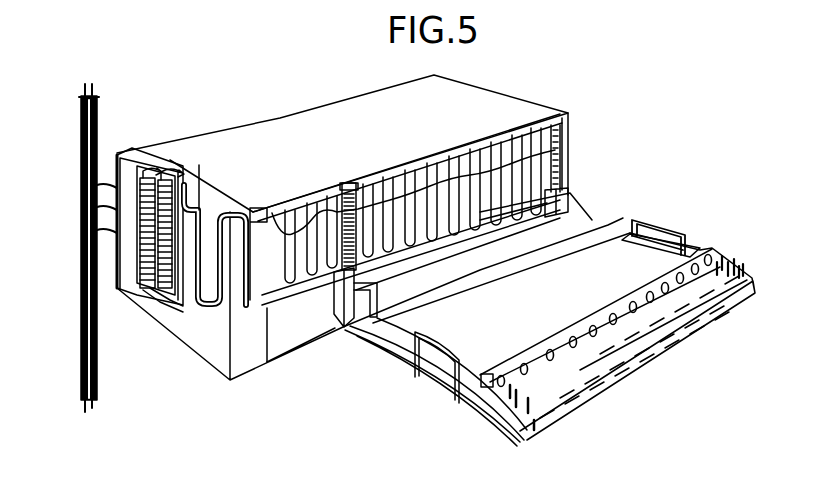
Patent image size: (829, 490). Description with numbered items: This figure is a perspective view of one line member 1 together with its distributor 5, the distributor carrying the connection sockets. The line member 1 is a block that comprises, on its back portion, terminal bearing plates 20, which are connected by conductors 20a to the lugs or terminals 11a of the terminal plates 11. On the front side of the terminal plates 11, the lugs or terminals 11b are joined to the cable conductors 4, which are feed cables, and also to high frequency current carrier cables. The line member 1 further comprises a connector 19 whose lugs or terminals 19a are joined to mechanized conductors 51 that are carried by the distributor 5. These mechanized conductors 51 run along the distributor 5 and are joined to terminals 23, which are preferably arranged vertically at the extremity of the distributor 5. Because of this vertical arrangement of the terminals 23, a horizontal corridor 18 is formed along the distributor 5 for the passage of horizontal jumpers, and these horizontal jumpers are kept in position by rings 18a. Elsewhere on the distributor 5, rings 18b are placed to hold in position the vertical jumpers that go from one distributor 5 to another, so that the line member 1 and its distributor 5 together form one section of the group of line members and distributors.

The line member 1 is at (213, 160).
The cable conductors 4 is at (100, 121).
The distributor 5 is at (633, 363).
The terminal plates 11 is at (135, 157).
The lugs or terminals 11a is at (160, 303).
The lugs or terminals 11b is at (112, 232).
The horizontal corridor 18 is at (583, 262).
The rings 18a is at (652, 222).
The rings 18b is at (417, 370).
The connector 19 is at (345, 318).
The lugs or terminals 19a is at (347, 332).
The terminal bearing plates 20 is at (336, 185).
The conductors 20a is at (207, 306).
The terminals 23 is at (550, 395).
The mechanized conductors 51 is at (380, 332).